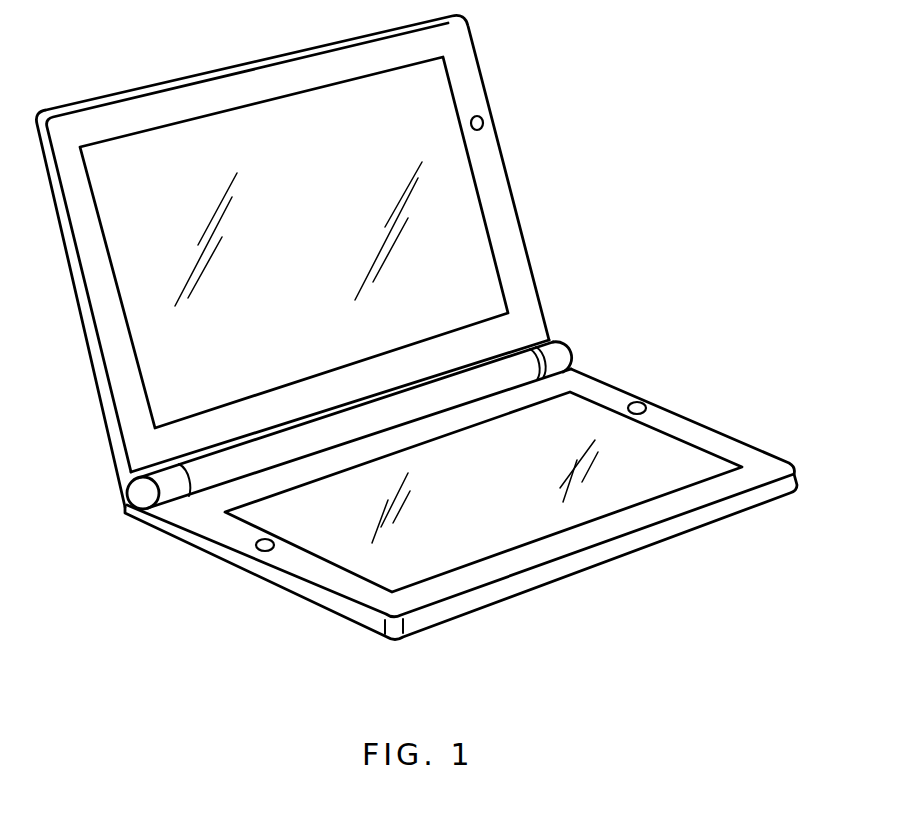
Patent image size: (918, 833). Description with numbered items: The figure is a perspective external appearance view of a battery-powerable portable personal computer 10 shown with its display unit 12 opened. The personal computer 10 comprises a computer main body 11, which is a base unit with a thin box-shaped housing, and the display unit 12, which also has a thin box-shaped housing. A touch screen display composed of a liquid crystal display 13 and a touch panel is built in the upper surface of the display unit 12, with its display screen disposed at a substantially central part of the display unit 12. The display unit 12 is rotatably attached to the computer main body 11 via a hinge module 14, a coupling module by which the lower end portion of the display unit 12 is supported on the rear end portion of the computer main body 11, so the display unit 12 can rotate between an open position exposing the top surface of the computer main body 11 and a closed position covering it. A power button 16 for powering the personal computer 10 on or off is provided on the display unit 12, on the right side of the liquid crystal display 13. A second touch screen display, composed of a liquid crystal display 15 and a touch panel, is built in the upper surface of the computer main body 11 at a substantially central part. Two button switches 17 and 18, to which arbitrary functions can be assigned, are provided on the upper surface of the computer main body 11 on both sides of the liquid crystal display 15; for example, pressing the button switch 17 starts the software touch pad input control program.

The personal computer 10 is at (594, 326).
The computer main body 11 is at (707, 423).
The display unit 12 is at (507, 178).
The liquid crystal display (LCD) 13 is at (480, 258).
The hinge module 14 is at (560, 360).
The liquid crystal display (LCD) 15 is at (363, 563).
The power button 16 is at (486, 116).
The button switch 17 is at (250, 547).
The button switch 18 is at (640, 398).